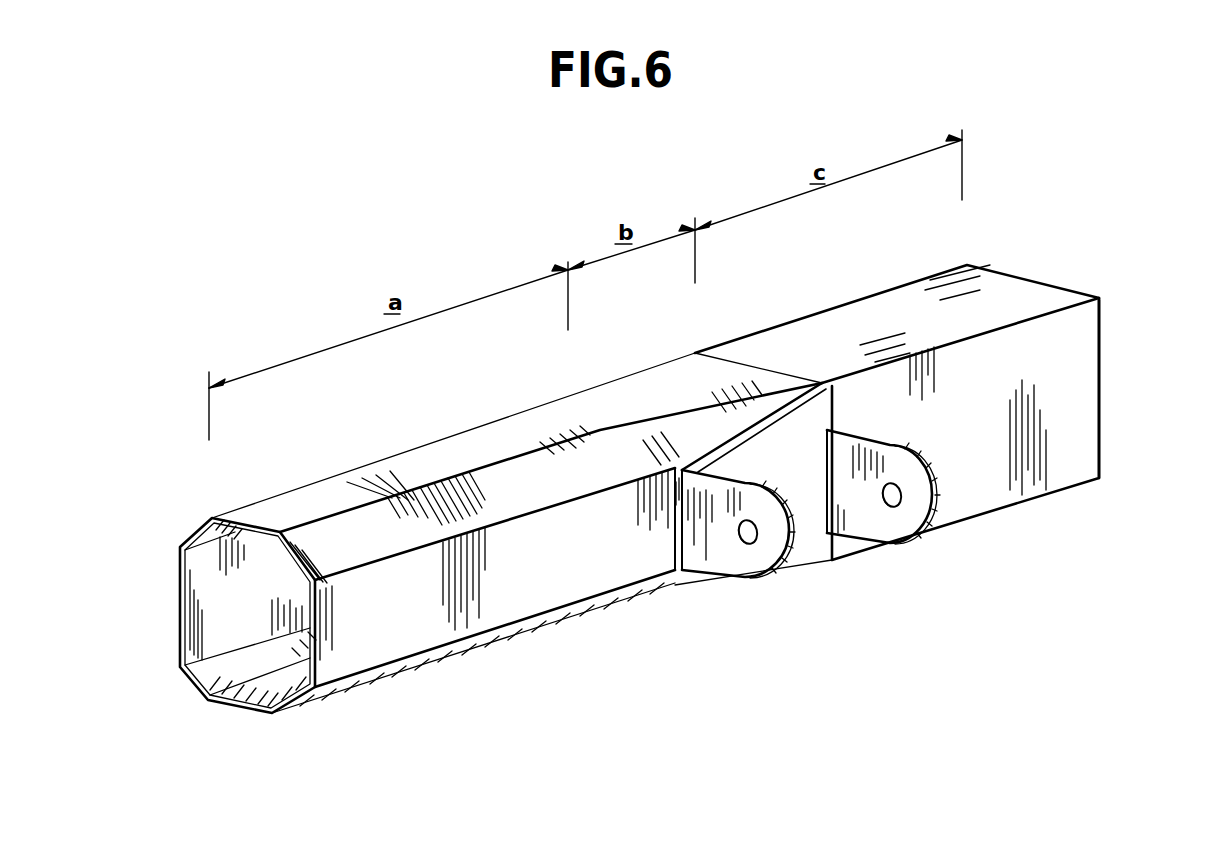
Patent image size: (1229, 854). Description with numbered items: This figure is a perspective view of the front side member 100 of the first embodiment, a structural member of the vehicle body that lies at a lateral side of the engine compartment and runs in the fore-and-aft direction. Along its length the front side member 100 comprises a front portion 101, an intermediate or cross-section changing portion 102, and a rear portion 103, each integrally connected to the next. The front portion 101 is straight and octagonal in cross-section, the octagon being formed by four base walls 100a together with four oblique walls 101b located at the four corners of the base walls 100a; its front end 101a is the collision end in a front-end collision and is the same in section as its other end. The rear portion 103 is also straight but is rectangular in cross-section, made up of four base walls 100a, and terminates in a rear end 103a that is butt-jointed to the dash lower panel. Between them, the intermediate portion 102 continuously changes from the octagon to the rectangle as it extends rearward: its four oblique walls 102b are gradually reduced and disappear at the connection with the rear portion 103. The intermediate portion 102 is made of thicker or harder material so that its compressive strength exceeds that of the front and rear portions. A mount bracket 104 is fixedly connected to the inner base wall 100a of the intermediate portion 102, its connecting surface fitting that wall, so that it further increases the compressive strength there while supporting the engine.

The front side member 100 is at (388, 688).
The base wall 100a is at (472, 449).
The front portion 101 is at (405, 470).
The front end 101a is at (180, 612).
The oblique wall 101b is at (355, 548).
The intermediate portion 102 is at (683, 373).
The oblique wall 102b is at (662, 430).
The rear portion 103 is at (840, 318).
The rear end 103a is at (1102, 405).
The mount bracket 104 is at (897, 470).